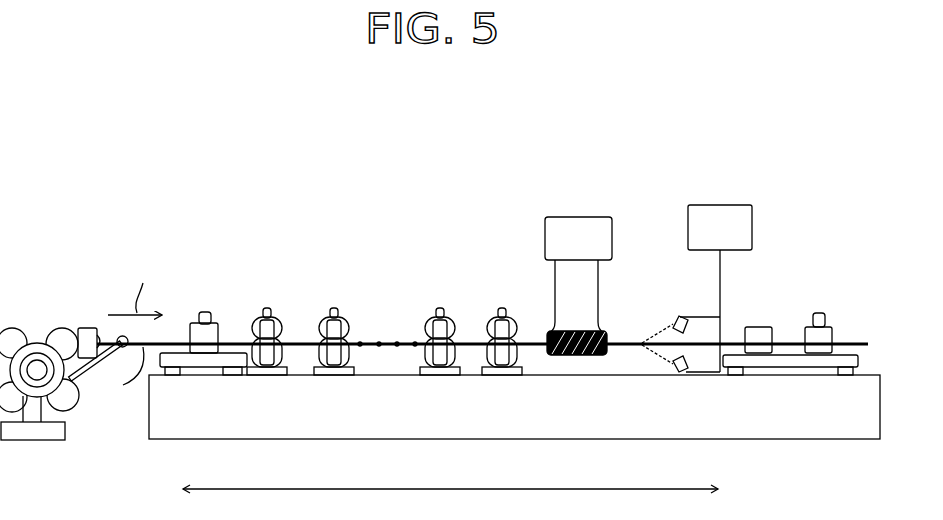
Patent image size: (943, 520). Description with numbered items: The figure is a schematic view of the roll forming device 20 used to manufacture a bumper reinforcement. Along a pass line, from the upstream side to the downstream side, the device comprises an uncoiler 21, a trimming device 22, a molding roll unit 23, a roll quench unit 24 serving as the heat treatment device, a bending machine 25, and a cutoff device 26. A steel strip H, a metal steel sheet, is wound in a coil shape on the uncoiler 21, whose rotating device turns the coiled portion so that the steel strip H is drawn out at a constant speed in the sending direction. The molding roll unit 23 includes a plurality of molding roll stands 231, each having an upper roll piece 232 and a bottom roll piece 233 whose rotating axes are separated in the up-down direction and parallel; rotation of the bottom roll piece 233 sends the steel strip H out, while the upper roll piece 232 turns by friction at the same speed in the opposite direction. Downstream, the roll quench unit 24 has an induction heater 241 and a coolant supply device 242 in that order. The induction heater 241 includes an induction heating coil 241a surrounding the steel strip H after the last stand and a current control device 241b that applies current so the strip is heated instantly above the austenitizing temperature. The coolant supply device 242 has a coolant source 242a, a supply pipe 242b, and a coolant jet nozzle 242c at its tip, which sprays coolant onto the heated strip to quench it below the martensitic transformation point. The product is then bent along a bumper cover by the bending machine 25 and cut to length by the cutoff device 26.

The roll forming device 20 is at (201, 203).
The uncoiler 21 is at (34, 304).
The trimming device 22 is at (206, 308).
The molding roll unit 23 is at (528, 247).
The molding roll stand 231 is at (266, 305).
The upper roll piece 232 is at (284, 329).
The bottom roll piece 233 is at (283, 358).
The roll quench unit 24 is at (750, 165).
The induction heater 241 is at (581, 196).
The induction heating coil 241a is at (605, 328).
The current control device 241b is at (599, 217).
The coolant supply device 242 is at (744, 193).
The coolant source 242a is at (753, 225).
The supply pipe 242b is at (721, 281).
The coolant jet nozzle 242c is at (678, 315).
The bending machine 25 is at (759, 326).
The cutoff device 26 is at (818, 310).
The steel strip H is at (468, 368).